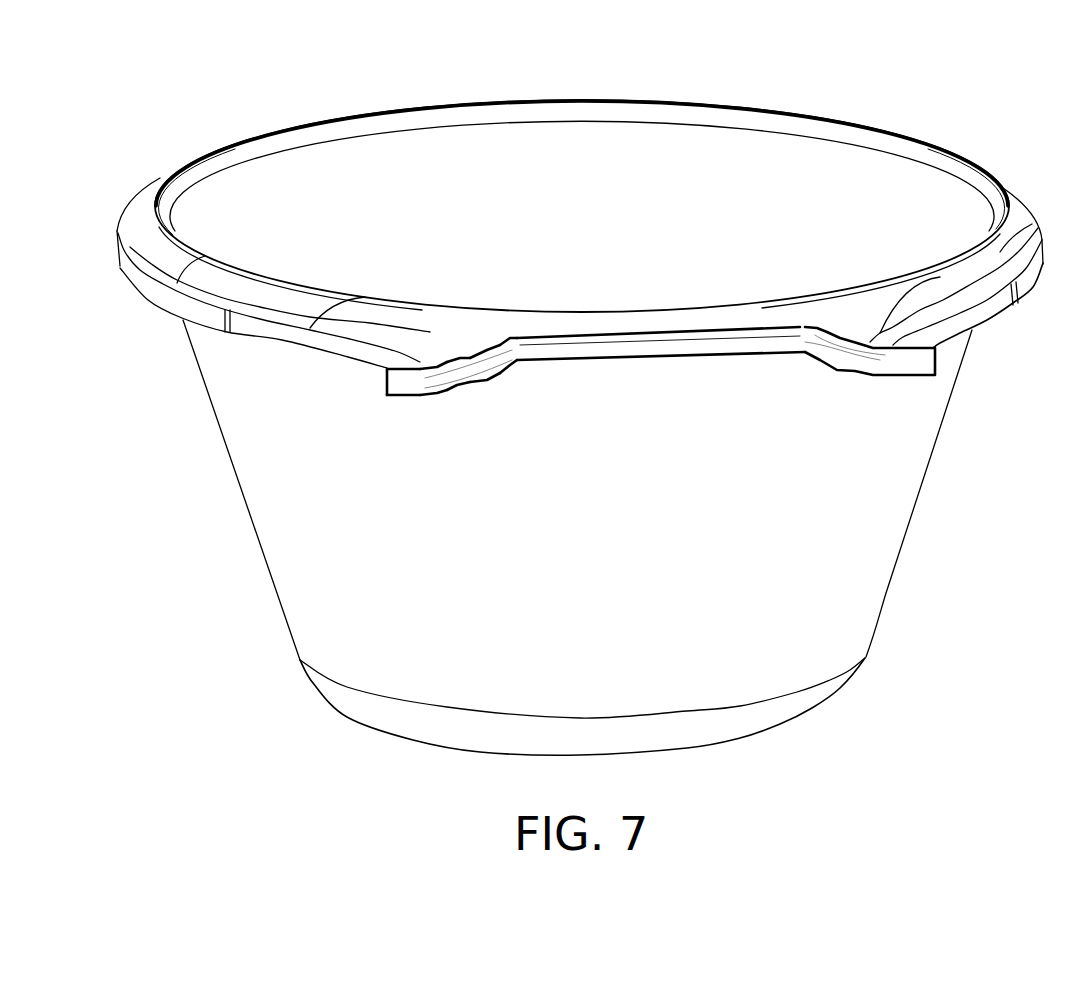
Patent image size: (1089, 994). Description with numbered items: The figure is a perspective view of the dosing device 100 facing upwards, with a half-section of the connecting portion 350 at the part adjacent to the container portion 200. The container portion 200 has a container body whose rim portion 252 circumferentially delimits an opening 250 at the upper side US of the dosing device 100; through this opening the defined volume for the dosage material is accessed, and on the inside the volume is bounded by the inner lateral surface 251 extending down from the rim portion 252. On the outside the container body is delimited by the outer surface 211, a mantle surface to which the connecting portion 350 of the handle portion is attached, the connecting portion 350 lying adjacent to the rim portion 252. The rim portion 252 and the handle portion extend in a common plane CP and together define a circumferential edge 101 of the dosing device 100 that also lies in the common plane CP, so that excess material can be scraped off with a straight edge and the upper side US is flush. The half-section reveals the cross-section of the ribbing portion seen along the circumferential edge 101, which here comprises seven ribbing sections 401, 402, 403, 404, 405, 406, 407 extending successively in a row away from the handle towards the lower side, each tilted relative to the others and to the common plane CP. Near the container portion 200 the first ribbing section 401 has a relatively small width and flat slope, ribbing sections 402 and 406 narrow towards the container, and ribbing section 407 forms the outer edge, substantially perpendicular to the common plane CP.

The dosing device 100 is at (977, 75).
The circumferential edge 101 is at (423, 93).
The container portion 200 is at (225, 130).
The outer surface 211 is at (867, 587).
The opening 250 is at (587, 166).
The inner lateral surface 251 is at (770, 182).
The rim portion 252 is at (150, 201).
The connecting portion 350 is at (614, 320).
The first ribbing section 401 is at (517, 360).
The ribbing section 402 is at (490, 377).
The ribbing section 403 is at (460, 386).
The ribbing section 404 is at (440, 348).
The ribbing section 405 is at (426, 398).
The ribbing section 406 is at (400, 398).
The ribbing section 407 is at (383, 384).
The upper side US is at (155, 167).
The common plane CP is at (1001, 159).